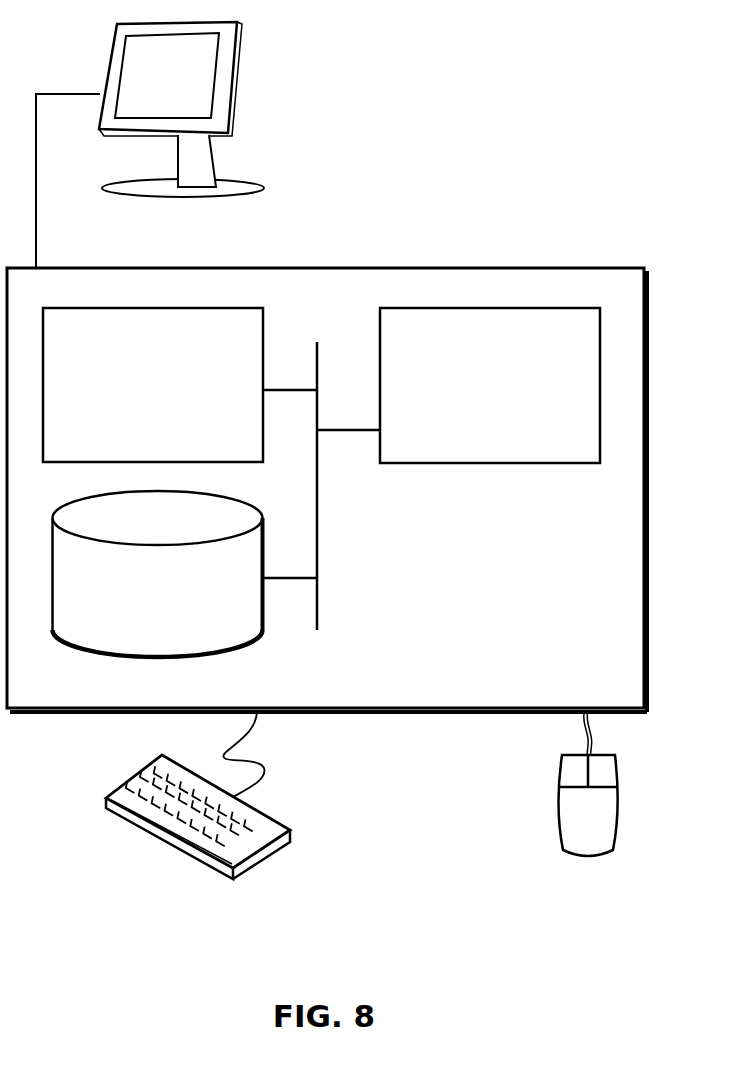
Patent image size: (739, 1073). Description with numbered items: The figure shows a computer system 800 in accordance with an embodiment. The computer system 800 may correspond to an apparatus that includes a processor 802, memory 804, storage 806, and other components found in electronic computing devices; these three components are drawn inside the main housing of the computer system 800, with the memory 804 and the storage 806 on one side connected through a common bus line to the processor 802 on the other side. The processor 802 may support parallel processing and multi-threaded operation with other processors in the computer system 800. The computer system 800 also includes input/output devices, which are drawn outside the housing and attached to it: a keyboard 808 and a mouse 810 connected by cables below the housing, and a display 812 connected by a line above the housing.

The computer system 800 is at (371, 247).
The processor 802 is at (490, 385).
The memory 804 is at (153, 385).
The storage 806 is at (158, 574).
The keyboard 808 is at (126, 817).
The mouse 810 is at (588, 784).
The display 812 is at (150, 145).